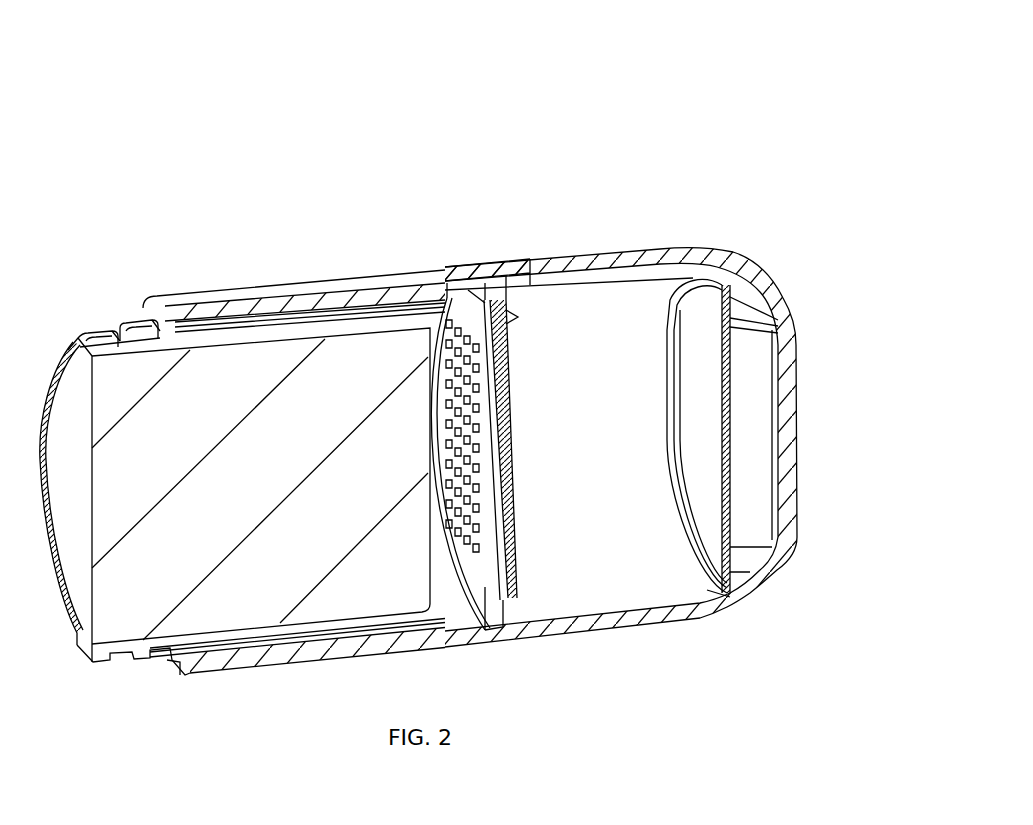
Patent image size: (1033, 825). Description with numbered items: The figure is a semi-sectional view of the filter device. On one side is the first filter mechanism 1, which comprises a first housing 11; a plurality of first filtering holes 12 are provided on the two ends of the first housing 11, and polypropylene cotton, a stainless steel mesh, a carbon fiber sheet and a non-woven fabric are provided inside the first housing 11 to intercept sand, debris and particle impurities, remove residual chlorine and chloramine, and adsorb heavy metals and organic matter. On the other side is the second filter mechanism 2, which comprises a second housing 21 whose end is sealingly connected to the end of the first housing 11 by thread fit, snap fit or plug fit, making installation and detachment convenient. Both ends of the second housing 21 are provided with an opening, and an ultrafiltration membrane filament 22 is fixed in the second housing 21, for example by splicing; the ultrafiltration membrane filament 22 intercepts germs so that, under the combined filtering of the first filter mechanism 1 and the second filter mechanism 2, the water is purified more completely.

The first filter mechanism 1 is at (645, 339).
The first housing 11 is at (608, 330).
The first filtering holes 12 is at (471, 335).
The second filter mechanism 2 is at (242, 366).
The second housing 21 is at (355, 303).
The ultrafiltration membrane filament 22 is at (179, 447).